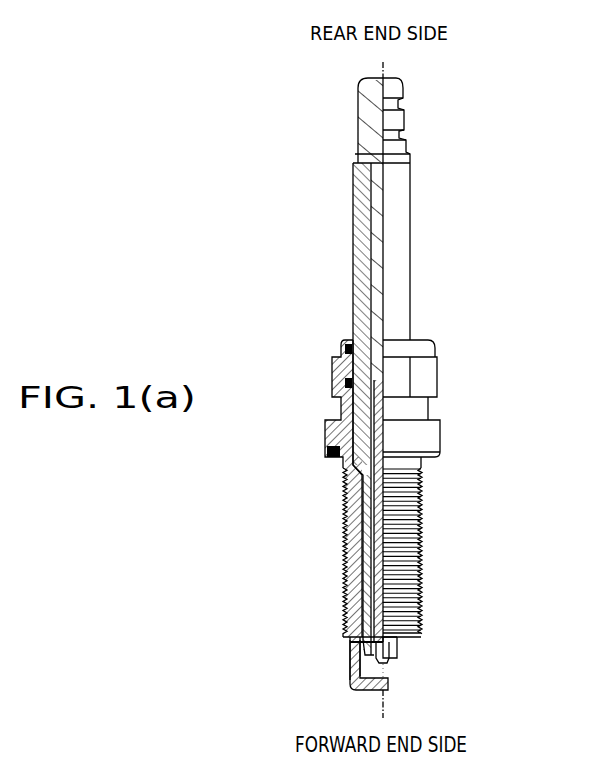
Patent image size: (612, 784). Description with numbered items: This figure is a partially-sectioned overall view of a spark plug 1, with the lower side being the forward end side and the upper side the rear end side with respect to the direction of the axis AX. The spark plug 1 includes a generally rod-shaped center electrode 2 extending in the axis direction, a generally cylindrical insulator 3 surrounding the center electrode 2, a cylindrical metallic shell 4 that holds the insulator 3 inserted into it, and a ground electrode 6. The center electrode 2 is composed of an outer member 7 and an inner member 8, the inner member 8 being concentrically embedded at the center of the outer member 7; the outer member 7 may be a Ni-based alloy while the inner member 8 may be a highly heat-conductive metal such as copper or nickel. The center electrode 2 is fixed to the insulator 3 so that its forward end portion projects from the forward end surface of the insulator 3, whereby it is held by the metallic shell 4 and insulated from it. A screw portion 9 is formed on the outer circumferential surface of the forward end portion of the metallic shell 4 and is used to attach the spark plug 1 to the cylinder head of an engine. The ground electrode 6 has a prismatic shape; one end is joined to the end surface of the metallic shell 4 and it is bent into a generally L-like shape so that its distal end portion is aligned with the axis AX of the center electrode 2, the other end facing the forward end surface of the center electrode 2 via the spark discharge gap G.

The spark plug 1 is at (397, 403).
The center electrode 2 is at (392, 665).
The insulator 3 is at (361, 590).
The metallic shell 4 is at (348, 612).
The ground electrode 6 is at (363, 686).
The outer member 7 is at (350, 666).
The inner member 8 is at (356, 646).
The screw portion 9 is at (421, 553).
The spark discharge gap G is at (391, 674).
The axis AX is at (389, 73).